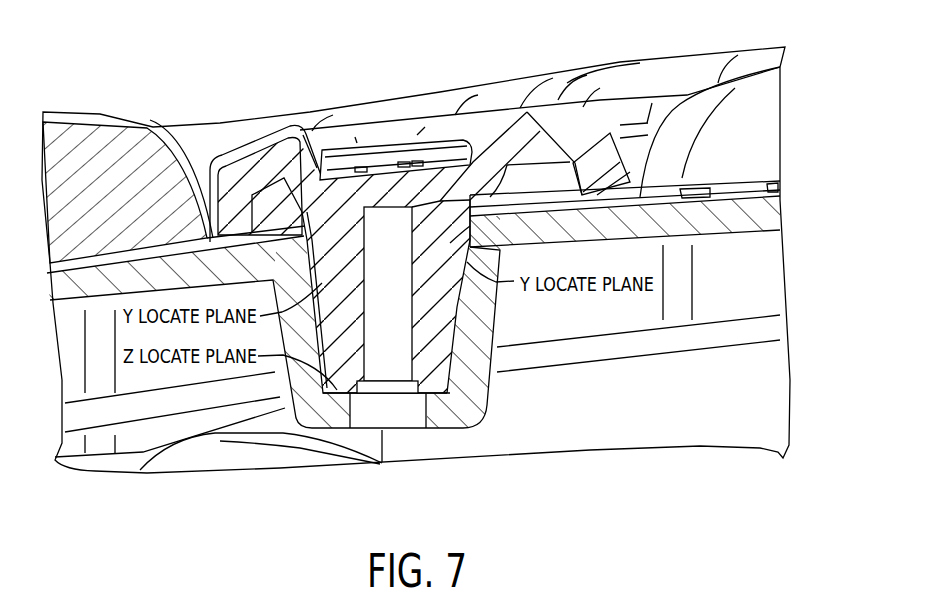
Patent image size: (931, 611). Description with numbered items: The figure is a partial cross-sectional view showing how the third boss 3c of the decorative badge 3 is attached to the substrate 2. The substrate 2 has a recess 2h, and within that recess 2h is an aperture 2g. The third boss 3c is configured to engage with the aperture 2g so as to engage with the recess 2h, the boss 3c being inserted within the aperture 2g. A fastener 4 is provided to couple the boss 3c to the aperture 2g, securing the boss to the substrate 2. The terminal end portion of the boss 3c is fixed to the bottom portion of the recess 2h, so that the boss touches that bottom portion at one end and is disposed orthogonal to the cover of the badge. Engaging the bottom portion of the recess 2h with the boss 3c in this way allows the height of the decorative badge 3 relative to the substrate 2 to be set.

The substrate 2 is at (480, 320).
The aperture 2g is at (427, 408).
The recess 2h is at (447, 373).
The decorative badge 3 is at (560, 138).
The third boss 3c is at (353, 398).
The fastener 4 is at (403, 415).